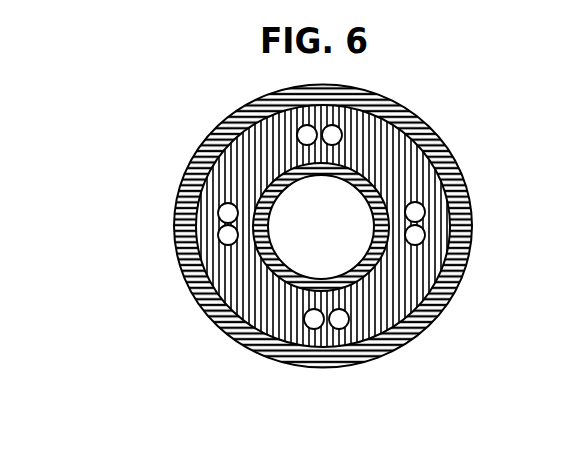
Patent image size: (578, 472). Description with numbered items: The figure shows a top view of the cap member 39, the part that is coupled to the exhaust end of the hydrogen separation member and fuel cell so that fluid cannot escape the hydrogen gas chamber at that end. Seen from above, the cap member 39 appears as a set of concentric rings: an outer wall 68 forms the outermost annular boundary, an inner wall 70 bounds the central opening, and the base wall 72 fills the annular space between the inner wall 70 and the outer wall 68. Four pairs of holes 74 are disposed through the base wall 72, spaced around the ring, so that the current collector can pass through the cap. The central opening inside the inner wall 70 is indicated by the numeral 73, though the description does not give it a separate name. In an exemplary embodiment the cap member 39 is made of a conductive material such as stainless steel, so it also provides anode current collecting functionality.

The cap member 39 is at (204, 140).
The outer wall 68 is at (352, 102).
The inner wall 70 is at (337, 170).
The base wall 72 is at (398, 296).
The central lumen 73 is at (317, 246).
The holes 74 is at (420, 206).